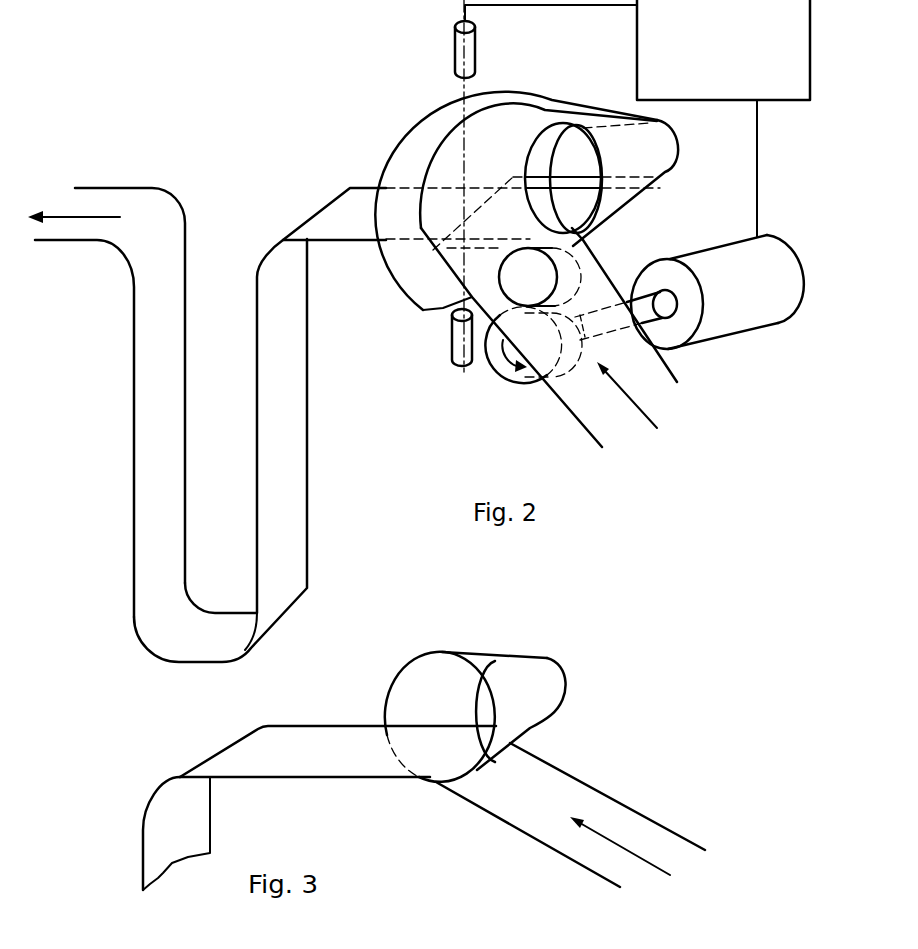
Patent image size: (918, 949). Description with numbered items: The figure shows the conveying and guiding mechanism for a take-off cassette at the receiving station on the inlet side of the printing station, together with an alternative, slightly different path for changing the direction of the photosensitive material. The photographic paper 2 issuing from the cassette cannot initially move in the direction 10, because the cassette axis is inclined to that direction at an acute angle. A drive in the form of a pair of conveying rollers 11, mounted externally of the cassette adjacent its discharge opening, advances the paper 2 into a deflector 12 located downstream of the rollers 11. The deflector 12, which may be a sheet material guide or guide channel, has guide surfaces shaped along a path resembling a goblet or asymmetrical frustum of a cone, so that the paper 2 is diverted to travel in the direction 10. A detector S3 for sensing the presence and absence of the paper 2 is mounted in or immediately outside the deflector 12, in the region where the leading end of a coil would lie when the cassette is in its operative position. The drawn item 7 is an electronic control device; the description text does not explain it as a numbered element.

In FIG. 2, the photographic paper 2 is at (300, 373).
In FIG. 3, the photographic paper 2 is at (305, 740).
In FIG. 2, the electronic control device 7 is at (730, 100).
In FIG. 2, the direction of travel 10 is at (35, 240).
In FIG. 2, the conveying rollers 11 is at (498, 329).
In FIG. 2, the deflector 12 is at (410, 162).
In FIG. 2, the detector S3 is at (455, 57).